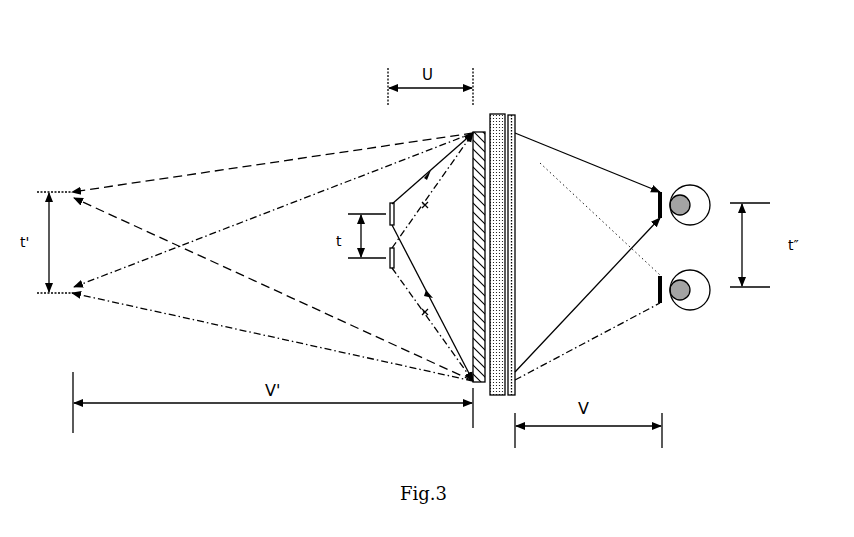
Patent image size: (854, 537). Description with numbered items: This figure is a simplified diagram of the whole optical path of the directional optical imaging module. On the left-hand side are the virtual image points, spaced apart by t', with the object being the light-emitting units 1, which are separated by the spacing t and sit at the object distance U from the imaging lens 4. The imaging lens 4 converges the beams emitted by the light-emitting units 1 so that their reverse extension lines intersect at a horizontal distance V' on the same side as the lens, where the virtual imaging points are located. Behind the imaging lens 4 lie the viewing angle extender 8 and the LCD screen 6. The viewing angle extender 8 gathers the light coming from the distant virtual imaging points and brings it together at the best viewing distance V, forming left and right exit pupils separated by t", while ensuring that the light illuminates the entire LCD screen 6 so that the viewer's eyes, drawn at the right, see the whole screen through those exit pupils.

The light-emitting units 1 is at (74, 190).
The imaging lens 4 is at (484, 131).
The viewing angle extender 8 is at (505, 115).
The LCD screen 6 is at (515, 115).